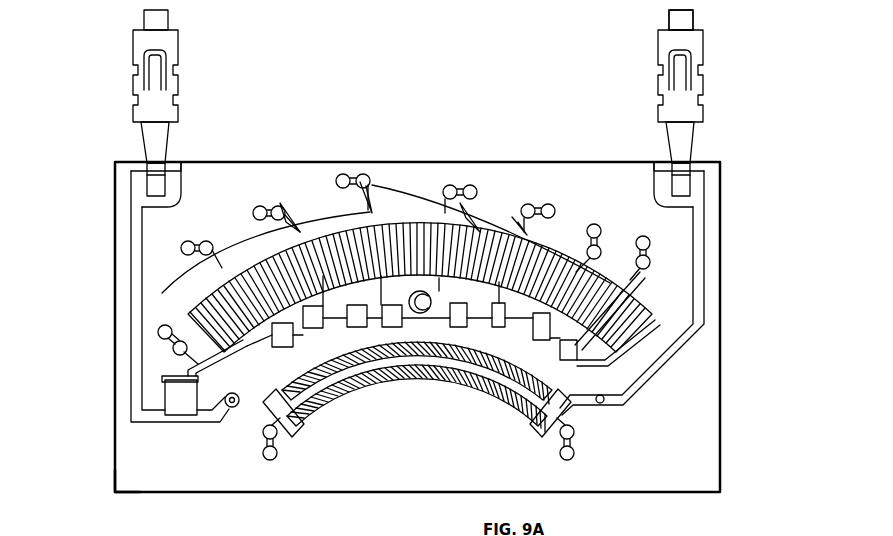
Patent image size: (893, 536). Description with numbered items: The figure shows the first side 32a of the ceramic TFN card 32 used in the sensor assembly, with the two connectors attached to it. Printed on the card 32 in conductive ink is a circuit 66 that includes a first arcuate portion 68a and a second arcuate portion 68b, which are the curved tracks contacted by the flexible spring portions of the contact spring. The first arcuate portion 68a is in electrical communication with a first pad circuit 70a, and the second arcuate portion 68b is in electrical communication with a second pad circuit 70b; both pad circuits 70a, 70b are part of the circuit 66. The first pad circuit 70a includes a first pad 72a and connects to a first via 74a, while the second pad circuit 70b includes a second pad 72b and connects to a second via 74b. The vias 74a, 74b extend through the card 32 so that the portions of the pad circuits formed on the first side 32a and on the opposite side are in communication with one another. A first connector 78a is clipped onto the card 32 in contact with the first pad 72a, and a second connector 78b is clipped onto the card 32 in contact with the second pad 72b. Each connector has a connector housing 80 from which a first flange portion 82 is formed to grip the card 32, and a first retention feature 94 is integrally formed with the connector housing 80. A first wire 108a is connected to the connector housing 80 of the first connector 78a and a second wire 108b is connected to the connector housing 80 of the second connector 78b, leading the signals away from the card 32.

The TFN card 32 is at (708, 411).
The first side of the card 32a is at (120, 474).
The circuit 66 is at (452, 403).
The first arcuate portion 68a is at (468, 238).
The second arcuate portion 68b is at (352, 397).
The first pad circuit 70a is at (137, 274).
The second pad circuit 70b is at (697, 246).
The first pad 72a is at (138, 192).
The second pad 72b is at (700, 192).
The first via 74a is at (236, 407).
The second via 74b is at (600, 405).
The first connector 78a is at (405, 102).
The second connector 78b is at (733, 67).
The connector housing 80 is at (172, 46).
The first flange portion 82 is at (165, 134).
The first retention feature 94 is at (157, 78).
The first wire 108a is at (158, 19).
The second wire 108b is at (668, 40).